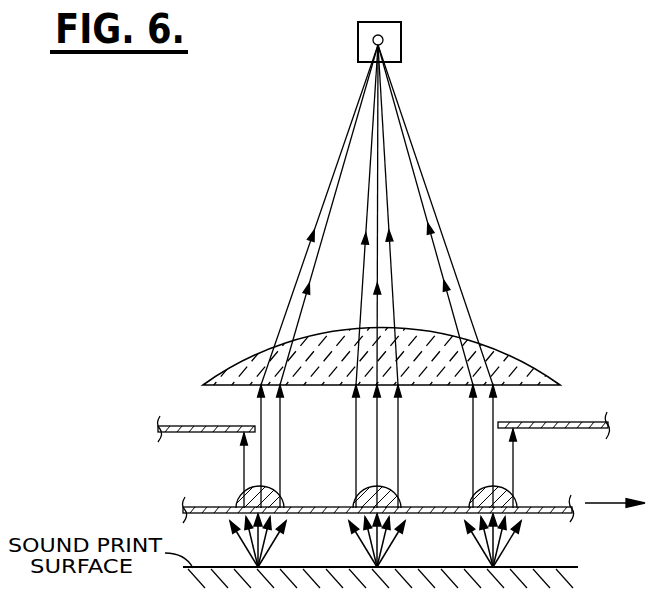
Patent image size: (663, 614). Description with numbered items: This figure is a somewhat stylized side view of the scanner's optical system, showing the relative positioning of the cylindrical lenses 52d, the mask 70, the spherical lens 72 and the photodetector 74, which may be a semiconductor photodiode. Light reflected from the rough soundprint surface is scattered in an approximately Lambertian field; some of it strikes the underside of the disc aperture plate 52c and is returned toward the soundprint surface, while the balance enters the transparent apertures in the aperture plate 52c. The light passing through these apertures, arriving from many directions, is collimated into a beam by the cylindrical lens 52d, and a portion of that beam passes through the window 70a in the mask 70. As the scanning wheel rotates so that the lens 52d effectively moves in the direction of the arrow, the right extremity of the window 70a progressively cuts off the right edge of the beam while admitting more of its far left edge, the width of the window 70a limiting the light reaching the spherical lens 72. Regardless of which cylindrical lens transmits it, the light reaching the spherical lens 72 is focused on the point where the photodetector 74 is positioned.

The photodetector 74 is at (358, 62).
The spherical lens 72 is at (255, 357).
The window 70a is at (253, 425).
The mask 70 is at (575, 418).
The disc aperture plate 52c is at (202, 507).
The cylindrical lens 52d is at (353, 500).